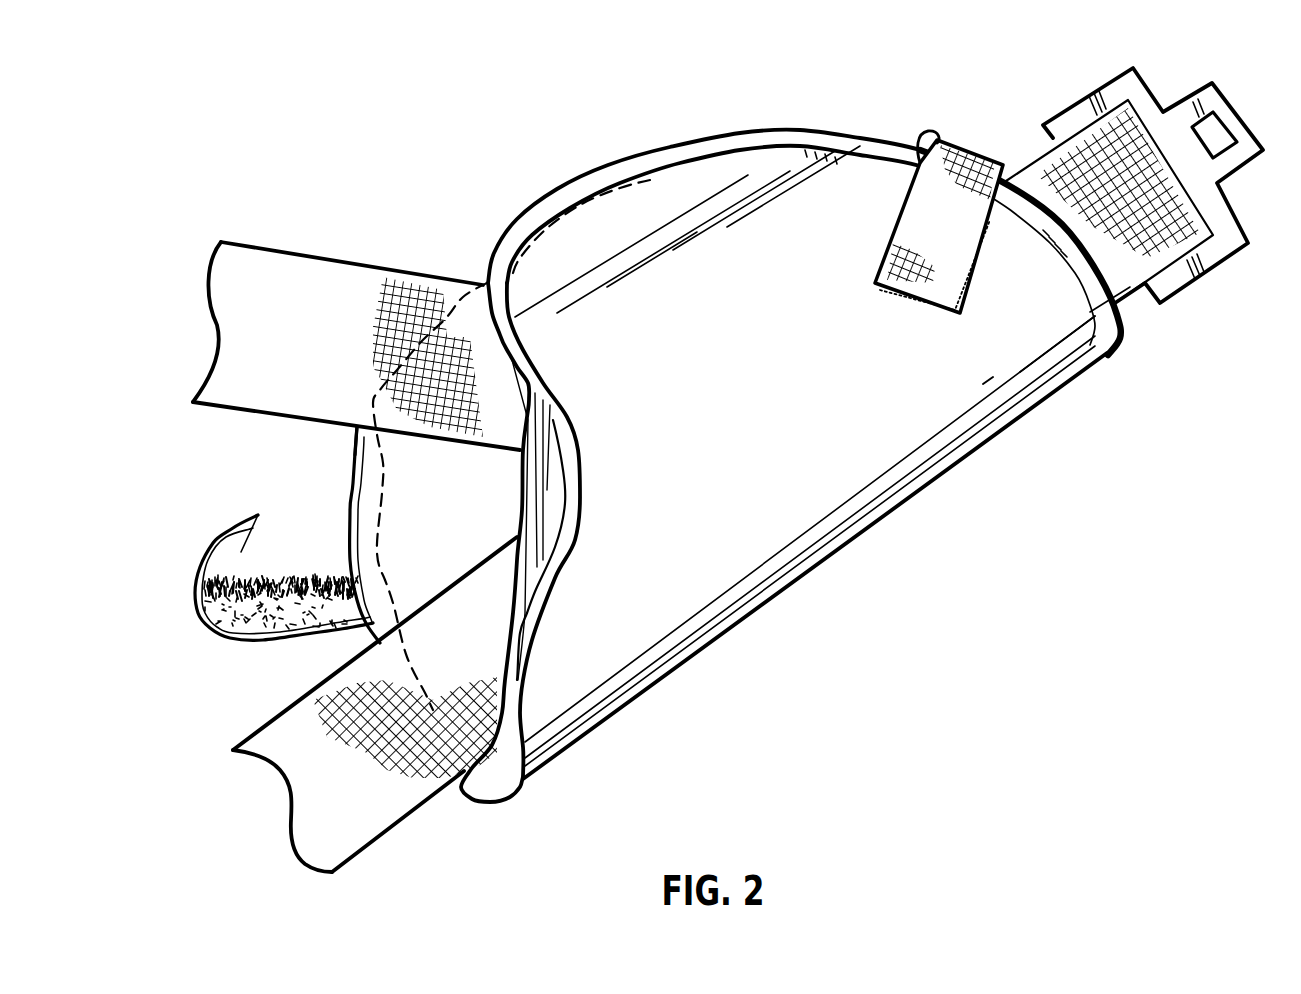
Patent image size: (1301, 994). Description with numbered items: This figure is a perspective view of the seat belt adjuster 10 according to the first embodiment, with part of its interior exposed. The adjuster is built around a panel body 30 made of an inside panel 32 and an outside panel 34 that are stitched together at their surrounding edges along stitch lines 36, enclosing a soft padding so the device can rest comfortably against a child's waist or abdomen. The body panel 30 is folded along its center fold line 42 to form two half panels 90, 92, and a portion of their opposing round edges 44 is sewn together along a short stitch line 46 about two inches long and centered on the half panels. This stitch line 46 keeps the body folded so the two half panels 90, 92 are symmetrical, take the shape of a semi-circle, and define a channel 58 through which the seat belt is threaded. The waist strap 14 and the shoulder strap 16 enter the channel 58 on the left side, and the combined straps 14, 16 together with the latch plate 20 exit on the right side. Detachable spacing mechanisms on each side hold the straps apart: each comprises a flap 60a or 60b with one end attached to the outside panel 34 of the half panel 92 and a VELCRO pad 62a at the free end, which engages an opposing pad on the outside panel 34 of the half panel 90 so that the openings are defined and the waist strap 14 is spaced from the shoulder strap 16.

The seat belt adjuster 10 is at (840, 600).
The waist strap 14 is at (372, 812).
The shoulder strap 16 is at (337, 277).
The latch plate 20 is at (1218, 100).
The panel body 30 is at (646, 632).
The inside panel 32 is at (370, 500).
The outside panel 34 is at (1020, 328).
The stitch lines 36 is at (378, 513).
The center fold line 42 is at (880, 512).
The opposing round edges 44 is at (593, 172).
The stitch line 46 is at (575, 217).
The channel 58 is at (484, 462).
The flap 60a is at (283, 620).
The flap 60b is at (908, 228).
The VELCRO pad 62a is at (200, 617).
The half panel 90 is at (763, 177).
The half panel 92 is at (382, 455).